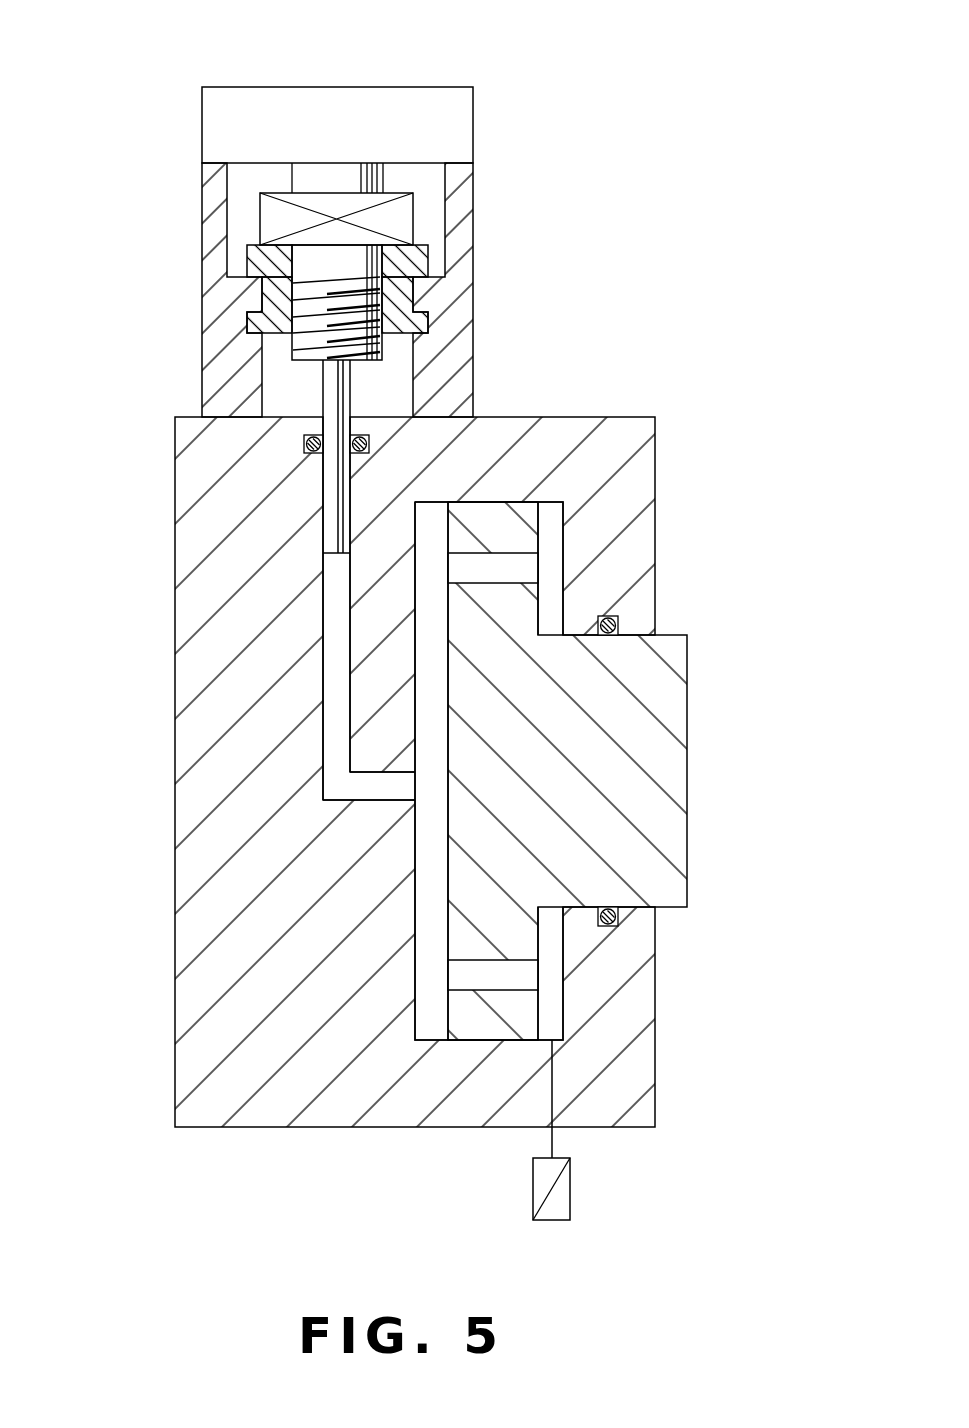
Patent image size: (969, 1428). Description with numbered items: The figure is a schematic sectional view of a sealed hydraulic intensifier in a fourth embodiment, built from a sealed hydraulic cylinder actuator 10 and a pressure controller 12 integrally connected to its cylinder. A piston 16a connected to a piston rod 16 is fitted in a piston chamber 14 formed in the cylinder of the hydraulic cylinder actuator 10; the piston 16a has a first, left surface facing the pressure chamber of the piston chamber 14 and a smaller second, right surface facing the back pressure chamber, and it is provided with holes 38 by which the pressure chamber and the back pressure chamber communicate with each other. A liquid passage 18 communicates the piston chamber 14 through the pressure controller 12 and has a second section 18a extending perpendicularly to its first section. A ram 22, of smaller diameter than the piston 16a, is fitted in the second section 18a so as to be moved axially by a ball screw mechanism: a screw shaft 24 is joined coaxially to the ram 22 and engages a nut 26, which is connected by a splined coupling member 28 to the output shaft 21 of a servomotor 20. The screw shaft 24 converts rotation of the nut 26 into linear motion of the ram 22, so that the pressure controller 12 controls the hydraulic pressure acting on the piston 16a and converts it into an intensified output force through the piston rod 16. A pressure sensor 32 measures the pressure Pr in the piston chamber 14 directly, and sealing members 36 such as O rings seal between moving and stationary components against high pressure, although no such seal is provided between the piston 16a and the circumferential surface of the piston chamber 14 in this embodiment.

The sealed hydraulic cylinder actuator 10 is at (688, 432).
The pressure controller 12 is at (520, 68).
The piston chamber 14 is at (428, 1023).
The piston rod 16 is at (668, 760).
The piston 16a is at (495, 515).
The liquid passage 18 is at (380, 790).
The second section 18a is at (333, 743).
The servomotor 20 is at (383, 100).
The output shaft 21 is at (317, 173).
The ram 22 is at (333, 527).
The screw shaft 24 is at (297, 357).
The nut 26 is at (250, 323).
The coupling member 28 is at (268, 215).
The pressure sensor 32 is at (567, 1197).
The sealing member 36 is at (303, 443).
The holes 38 is at (522, 980).